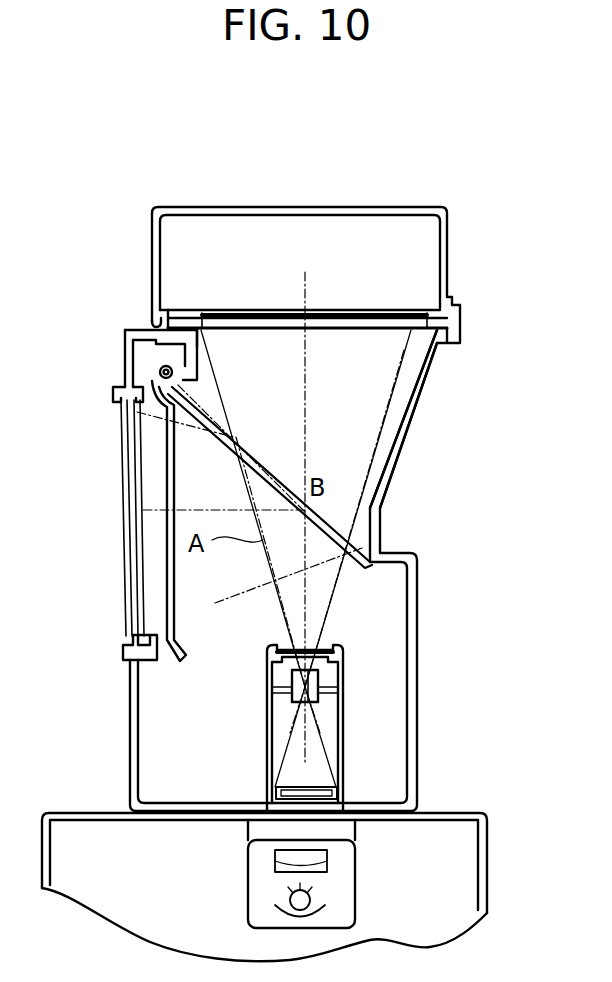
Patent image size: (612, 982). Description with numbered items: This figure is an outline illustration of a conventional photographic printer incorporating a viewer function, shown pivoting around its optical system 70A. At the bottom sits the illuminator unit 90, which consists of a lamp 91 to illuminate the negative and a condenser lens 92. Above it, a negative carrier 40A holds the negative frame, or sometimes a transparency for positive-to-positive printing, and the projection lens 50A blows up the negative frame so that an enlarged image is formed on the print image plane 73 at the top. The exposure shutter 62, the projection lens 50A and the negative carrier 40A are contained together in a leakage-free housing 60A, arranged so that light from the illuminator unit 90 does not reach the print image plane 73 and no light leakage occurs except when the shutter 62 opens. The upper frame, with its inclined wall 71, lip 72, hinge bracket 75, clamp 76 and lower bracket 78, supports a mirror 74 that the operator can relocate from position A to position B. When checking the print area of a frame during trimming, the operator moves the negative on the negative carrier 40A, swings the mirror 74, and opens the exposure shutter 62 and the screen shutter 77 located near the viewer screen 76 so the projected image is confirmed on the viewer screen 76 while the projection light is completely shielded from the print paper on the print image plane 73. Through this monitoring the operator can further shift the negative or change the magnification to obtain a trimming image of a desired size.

The document reading unit frame 70A is at (445, 376).
The mirror 74 is at (150, 218).
The print image plane 73 is at (392, 328).
The hinge bracket 75 is at (160, 362).
The frame lip 72 is at (190, 350).
The inclined wall 71 is at (418, 408).
The viewer screen 76 is at (121, 444).
The screen shutter 77 is at (125, 574).
The lower bracket 78 is at (140, 655).
The exposure shutter 62 is at (320, 648).
The projection lens 50A is at (321, 672).
The lens housing 60A is at (343, 687).
The negative carrier 40A is at (318, 793).
The illuminator unit 90 is at (362, 873).
The lamp 91 is at (284, 909).
The condenser lens 92 is at (272, 868).